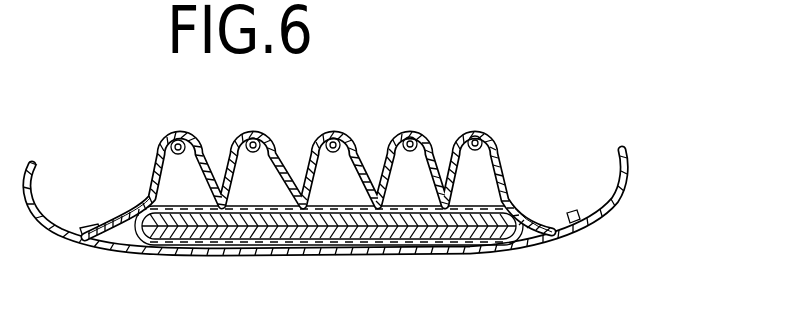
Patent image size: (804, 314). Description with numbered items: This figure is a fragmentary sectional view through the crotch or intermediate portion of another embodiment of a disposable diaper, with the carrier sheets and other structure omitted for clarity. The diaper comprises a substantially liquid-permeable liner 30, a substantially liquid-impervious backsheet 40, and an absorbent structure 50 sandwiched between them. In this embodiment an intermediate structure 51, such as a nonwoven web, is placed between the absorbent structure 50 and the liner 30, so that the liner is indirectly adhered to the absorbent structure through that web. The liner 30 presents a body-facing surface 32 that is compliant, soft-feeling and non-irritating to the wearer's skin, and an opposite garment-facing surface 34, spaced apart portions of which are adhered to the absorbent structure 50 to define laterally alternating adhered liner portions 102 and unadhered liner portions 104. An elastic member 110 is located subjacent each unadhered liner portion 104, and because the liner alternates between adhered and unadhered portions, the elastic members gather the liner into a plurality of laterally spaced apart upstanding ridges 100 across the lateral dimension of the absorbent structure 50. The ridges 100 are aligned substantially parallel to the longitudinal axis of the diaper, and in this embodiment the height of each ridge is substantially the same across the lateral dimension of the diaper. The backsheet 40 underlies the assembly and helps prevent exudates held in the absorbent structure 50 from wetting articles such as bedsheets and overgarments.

The upstanding ridges 100 is at (332, 130).
The elastic member 110 is at (165, 137).
The unadhered liner portions 104 is at (268, 137).
The liner 30 is at (408, 130).
The body-facing surface 32 is at (471, 130).
The garment-facing surface 34 is at (497, 172).
The backsheet 40 is at (624, 200).
The absorbent structure 50 is at (486, 232).
The intermediate structure 51 is at (318, 208).
The adhered liner portions 102 is at (218, 205).